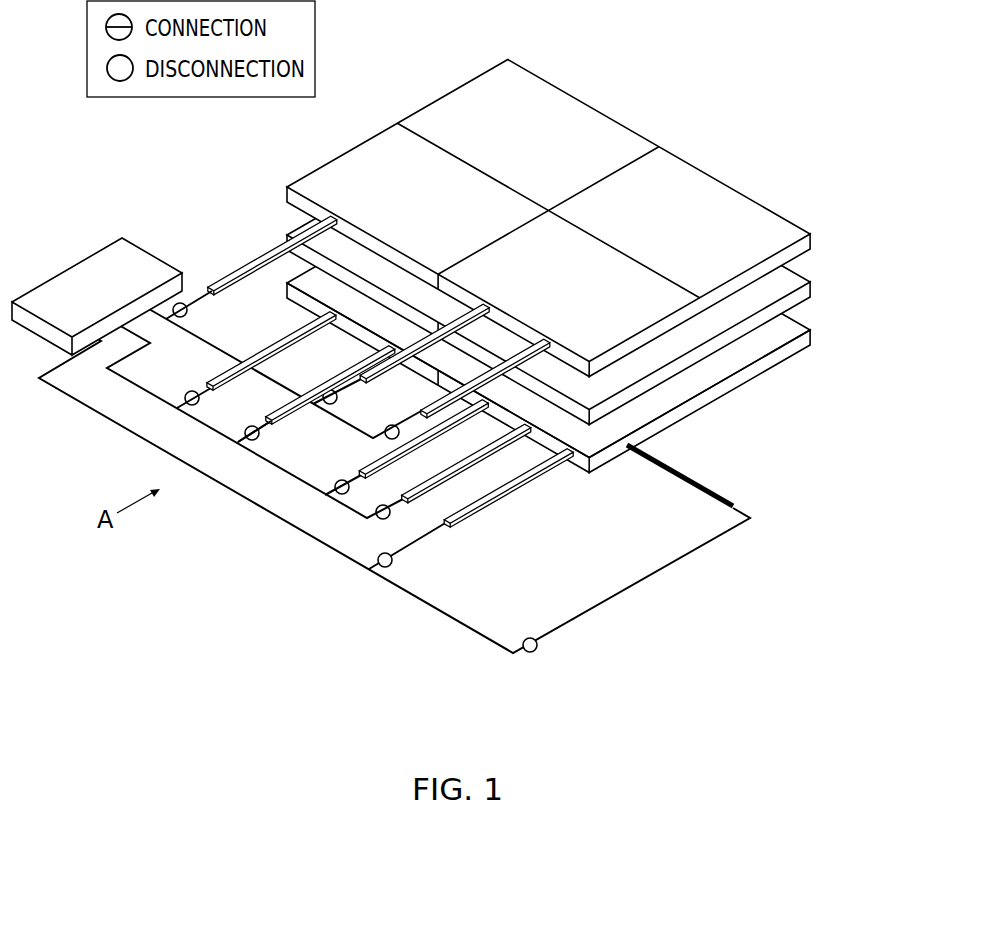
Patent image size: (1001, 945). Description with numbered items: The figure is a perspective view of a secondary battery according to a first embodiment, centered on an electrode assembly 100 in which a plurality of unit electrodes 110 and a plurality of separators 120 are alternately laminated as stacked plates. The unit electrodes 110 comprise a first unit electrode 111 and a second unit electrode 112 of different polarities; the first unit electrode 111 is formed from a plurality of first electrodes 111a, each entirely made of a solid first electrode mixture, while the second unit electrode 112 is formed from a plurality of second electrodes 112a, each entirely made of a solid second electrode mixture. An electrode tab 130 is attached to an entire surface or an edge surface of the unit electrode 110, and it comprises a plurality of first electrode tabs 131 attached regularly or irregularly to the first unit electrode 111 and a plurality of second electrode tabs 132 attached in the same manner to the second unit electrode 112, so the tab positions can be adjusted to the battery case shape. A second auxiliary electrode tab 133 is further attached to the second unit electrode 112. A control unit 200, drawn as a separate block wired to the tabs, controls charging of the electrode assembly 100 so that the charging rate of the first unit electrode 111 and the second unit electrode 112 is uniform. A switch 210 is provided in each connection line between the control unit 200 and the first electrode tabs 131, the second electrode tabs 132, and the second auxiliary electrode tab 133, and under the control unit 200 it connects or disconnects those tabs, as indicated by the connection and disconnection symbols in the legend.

The electrode assembly 100 is at (481, 360).
The unit electrode 110 is at (605, 269).
The first unit electrode 111 is at (580, 218).
The first electrode 111a is at (593, 128).
The second unit electrode 112 is at (580, 317).
The second electrode 112a is at (752, 353).
The separator 120 is at (293, 232).
The electrode tab 130 is at (394, 502).
The first electrode tab 131 is at (422, 412).
The second electrode tab 132 is at (405, 499).
The second auxiliary electrode tab 133 is at (700, 498).
The control unit 200 is at (111, 229).
The switch 210 is at (244, 436).